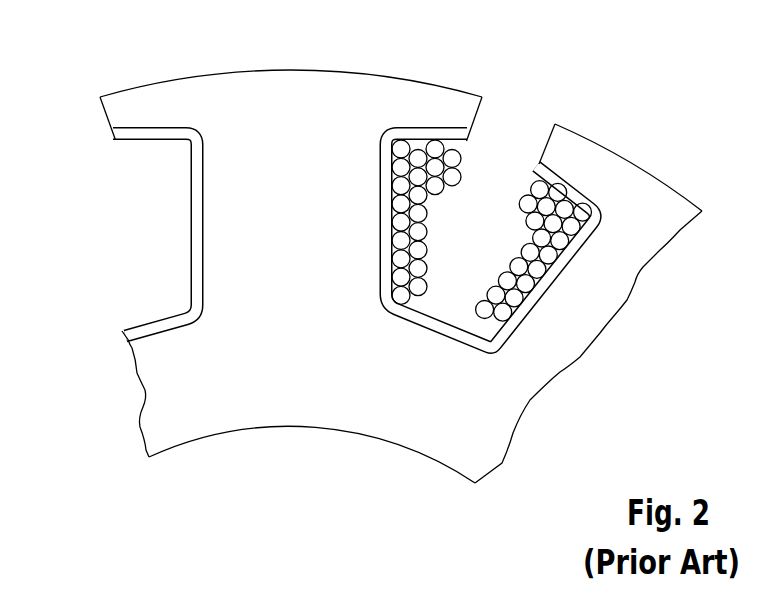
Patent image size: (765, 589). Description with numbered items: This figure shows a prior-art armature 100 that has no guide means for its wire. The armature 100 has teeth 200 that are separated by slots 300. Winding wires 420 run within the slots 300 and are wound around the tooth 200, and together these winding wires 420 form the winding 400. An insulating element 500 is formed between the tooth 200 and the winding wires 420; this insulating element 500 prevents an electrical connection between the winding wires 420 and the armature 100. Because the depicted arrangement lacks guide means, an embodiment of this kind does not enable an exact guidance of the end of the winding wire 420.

The armature 100 is at (104, 207).
The teeth 200 is at (290, 83).
The slots 300 is at (437, 257).
The winding 400 is at (371, 222).
The winding wires 420 is at (398, 187).
The insulating element 500 is at (440, 329).